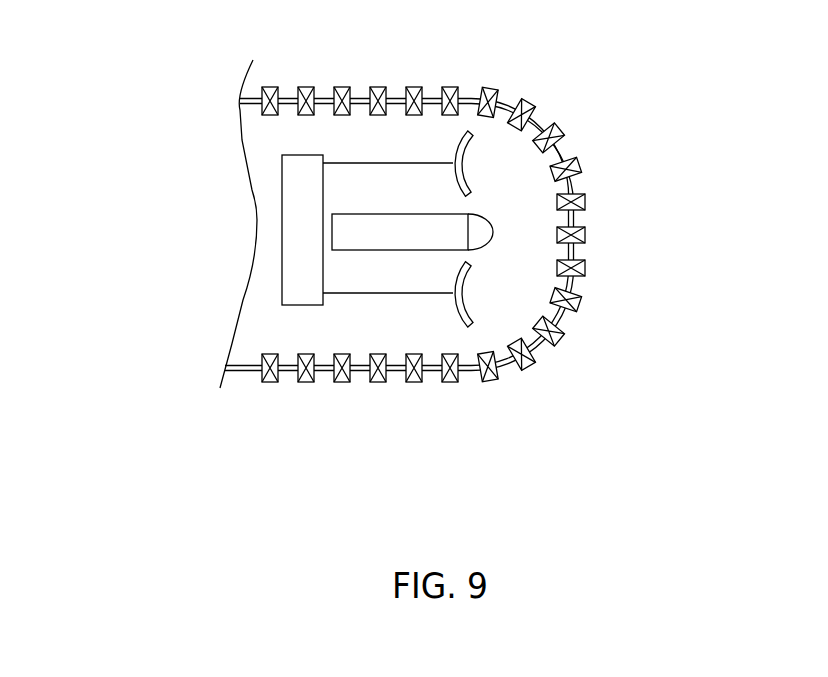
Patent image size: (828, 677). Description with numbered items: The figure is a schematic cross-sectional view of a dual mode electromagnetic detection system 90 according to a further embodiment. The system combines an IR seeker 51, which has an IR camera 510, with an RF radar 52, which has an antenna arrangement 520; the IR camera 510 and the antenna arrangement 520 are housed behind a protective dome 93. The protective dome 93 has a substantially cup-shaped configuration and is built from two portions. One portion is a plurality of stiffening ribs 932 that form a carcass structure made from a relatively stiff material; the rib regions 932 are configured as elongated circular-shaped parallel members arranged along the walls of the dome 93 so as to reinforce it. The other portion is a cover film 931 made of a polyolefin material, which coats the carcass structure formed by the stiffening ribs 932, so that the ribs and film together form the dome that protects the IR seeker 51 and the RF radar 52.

The dual mode electromagnetic detection system 90 is at (172, 352).
The protective dome 93 is at (462, 248).
The cover film 931 is at (577, 252).
The stiffening ribs 932 is at (566, 130).
The RF radar 52 is at (304, 155).
The antenna arrangement 520 is at (470, 163).
The IR seeker 51 is at (362, 250).
The IR camera 510 is at (473, 231).